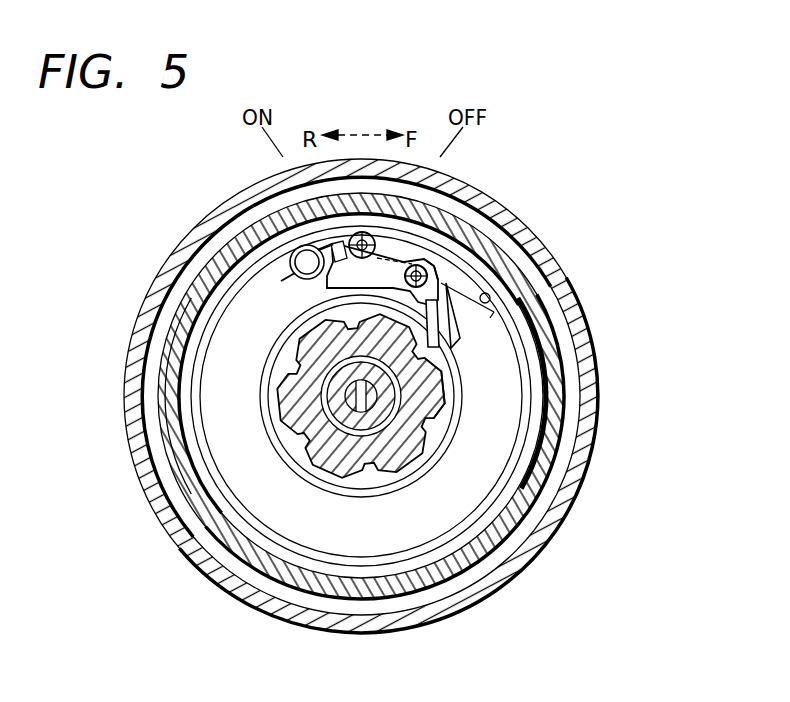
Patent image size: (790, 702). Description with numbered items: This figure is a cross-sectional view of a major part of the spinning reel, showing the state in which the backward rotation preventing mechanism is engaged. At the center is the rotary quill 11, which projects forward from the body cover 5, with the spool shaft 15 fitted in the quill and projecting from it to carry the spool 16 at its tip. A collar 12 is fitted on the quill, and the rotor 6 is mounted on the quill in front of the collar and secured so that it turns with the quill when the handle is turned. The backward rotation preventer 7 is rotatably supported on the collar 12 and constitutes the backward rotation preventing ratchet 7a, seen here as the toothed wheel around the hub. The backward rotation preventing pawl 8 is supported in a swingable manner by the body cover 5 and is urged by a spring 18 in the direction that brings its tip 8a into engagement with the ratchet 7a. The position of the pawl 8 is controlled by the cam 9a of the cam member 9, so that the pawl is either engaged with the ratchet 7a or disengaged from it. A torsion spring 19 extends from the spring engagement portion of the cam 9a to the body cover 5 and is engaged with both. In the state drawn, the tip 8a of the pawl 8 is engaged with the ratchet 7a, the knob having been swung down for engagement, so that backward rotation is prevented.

The body cover 5 is at (183, 383).
The rotor 6 is at (172, 304).
The backward rotation preventer 7 is at (460, 378).
The backward rotation preventing ratchet 7a is at (412, 403).
The backward rotation preventing pawl 8 is at (445, 284).
The tip of the pawl 8a is at (432, 350).
The cam member 9 is at (394, 224).
The cam 9a is at (446, 256).
The rotary quill 11 is at (400, 408).
The collar 12 is at (383, 408).
The spool shaft 15 is at (352, 398).
The spool 16 is at (130, 348).
The spring 18 is at (497, 312).
The torsion spring 19 is at (268, 277).